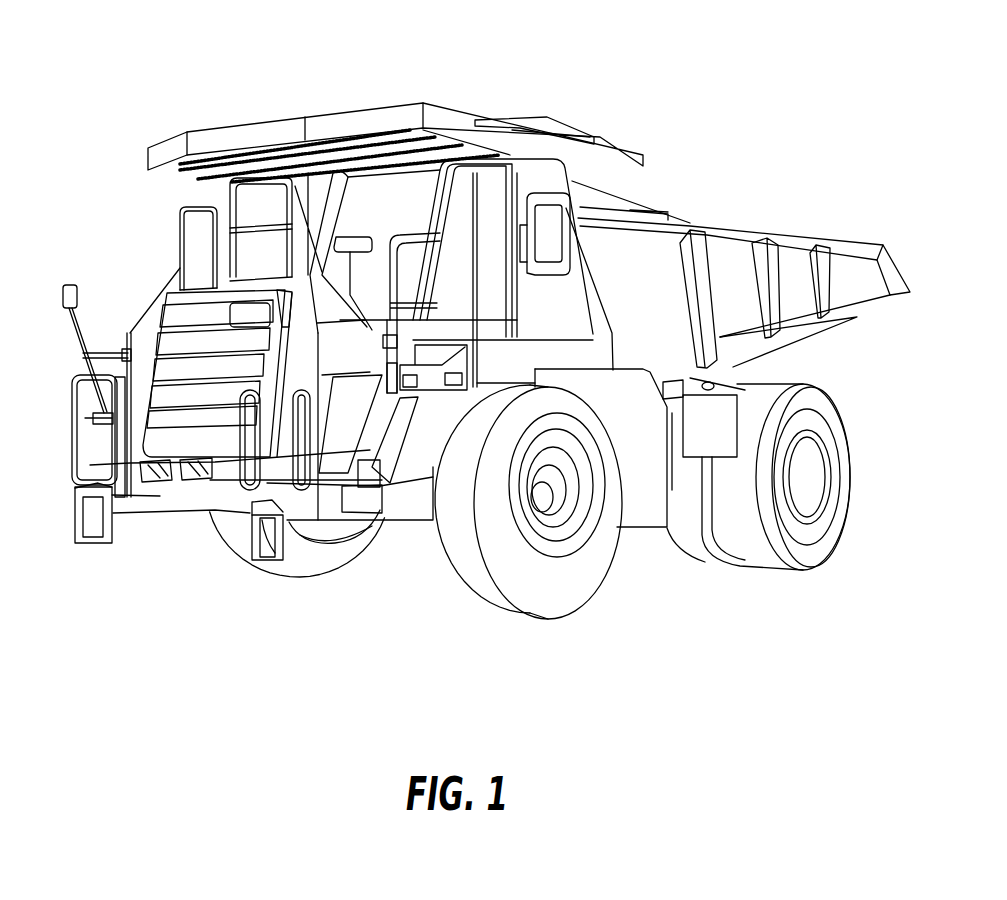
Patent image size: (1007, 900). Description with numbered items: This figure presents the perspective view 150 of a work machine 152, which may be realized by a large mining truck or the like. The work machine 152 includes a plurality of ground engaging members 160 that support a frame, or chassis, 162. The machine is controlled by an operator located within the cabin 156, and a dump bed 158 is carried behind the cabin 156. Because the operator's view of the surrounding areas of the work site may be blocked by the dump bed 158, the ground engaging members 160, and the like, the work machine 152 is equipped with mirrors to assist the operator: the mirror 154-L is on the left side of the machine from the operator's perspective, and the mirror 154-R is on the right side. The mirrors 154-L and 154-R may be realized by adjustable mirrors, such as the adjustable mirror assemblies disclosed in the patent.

The view 150 is at (226, 52).
The work machine 152 is at (366, 108).
The mirror 154-R is at (196, 192).
The mirror 154-L is at (558, 213).
The cabin 156 is at (460, 207).
The dump bed 158 is at (735, 233).
The ground engaging members 160 is at (843, 451).
The frame, or chassis 162 is at (745, 390).